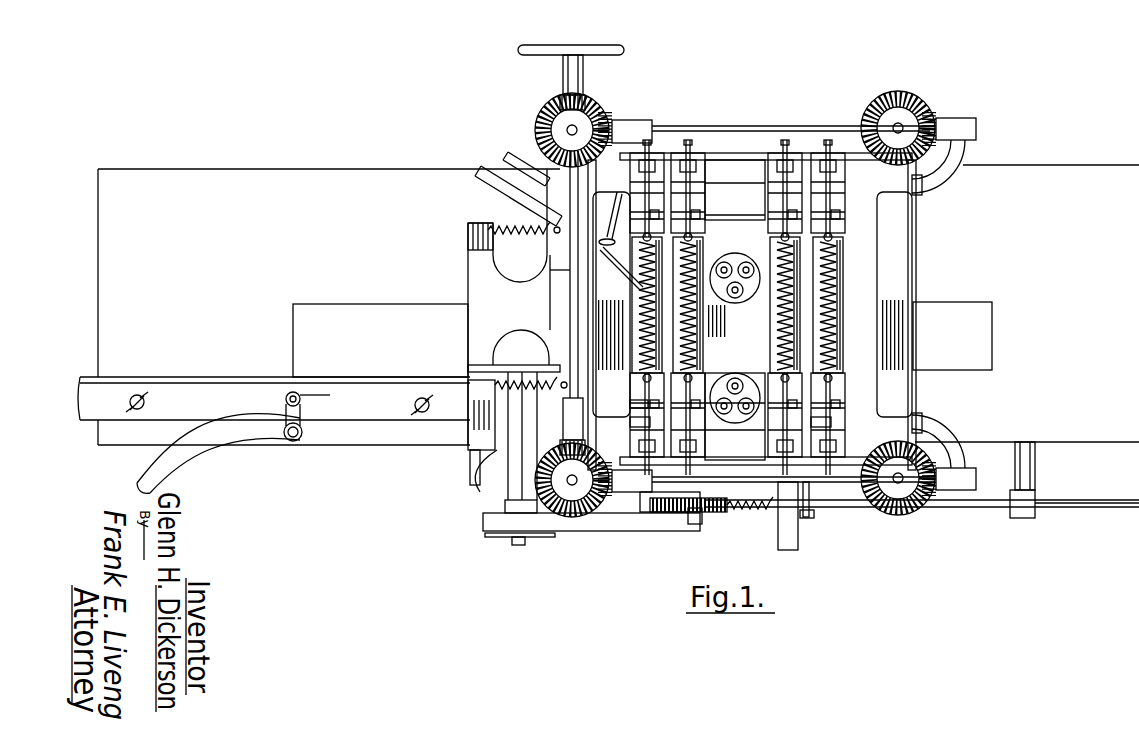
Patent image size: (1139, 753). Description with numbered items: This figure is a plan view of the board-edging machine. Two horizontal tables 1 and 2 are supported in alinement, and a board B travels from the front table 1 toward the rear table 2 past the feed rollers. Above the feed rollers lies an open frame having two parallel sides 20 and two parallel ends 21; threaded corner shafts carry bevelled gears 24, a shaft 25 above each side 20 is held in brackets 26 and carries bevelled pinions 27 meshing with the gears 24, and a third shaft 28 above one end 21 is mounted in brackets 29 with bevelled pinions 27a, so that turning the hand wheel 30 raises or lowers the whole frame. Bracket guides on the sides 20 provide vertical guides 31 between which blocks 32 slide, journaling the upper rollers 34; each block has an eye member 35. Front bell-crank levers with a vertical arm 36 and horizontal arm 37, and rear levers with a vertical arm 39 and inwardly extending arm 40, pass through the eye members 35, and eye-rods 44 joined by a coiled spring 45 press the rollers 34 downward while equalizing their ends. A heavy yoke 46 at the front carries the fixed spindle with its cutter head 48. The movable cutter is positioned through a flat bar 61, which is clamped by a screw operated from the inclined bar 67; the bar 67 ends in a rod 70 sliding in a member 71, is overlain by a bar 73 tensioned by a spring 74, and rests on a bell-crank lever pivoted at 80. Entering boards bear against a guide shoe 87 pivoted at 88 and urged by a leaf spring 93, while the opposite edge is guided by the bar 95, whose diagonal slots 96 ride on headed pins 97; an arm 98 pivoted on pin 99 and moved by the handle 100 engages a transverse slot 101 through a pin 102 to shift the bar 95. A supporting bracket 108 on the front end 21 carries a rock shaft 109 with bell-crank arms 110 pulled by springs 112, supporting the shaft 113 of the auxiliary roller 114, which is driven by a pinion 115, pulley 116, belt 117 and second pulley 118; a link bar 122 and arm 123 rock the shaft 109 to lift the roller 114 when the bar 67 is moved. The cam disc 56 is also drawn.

The front table 1 is at (306, 184).
The rear table 2 is at (1100, 180).
The board B is at (365, 313).
The sides of the open frame 20 is at (736, 158).
The ends of the open frame 21 is at (548, 165).
The bevelled gear 24 is at (604, 128).
The shaft 25 is at (765, 127).
The brackets 26 is at (640, 125).
The bevelled pinion 27 is at (936, 122).
The bevelled pinions 27a is at (588, 112).
The third shaft 28 is at (570, 284).
The brackets 29 is at (565, 76).
The hand wheel 30 is at (608, 50).
The vertical guides 31 is at (628, 138).
The blocks 32 is at (838, 237).
The rollers 34 is at (632, 283).
The eye member 35 is at (640, 407).
The vertical arm 36 is at (840, 446).
The horizontal arm 37 is at (840, 401).
The vertical arm 39 is at (652, 160).
The inwardly extending arm 40 is at (706, 184).
The eye-rods 44 is at (780, 206).
The coiled spring 45 is at (640, 316).
The yoke 46 is at (846, 421).
The cutter head 48 is at (740, 382).
The upper cam disc 56 is at (736, 266).
The flat bar 61 is at (800, 552).
The bar 67 is at (988, 509).
The rod 70 is at (1060, 509).
The member 71 is at (1020, 520).
The bar 73 is at (787, 492).
The spring 74 is at (760, 511).
The pivot 80 is at (810, 519).
The guide shoe 87 is at (492, 186).
The pivot post 88 is at (630, 269).
The leaf spring 93 is at (522, 176).
The guide bar 95 is at (365, 412).
The diagonally cut slots 96 is at (146, 404).
The headed pins 97 is at (139, 395).
The arm 98 is at (301, 416).
The pin 99 is at (292, 442).
The operating arm or handle 100 is at (220, 437).
The transverse slot 101 is at (290, 394).
The pin 102 is at (305, 398).
The supporting bracket 108 is at (475, 313).
The rock shaft 109 is at (480, 417).
The vertical arm 110 is at (472, 227).
The springs 112 is at (540, 216).
The shaft 113 is at (518, 546).
The roller 114 is at (475, 249).
The pinion 115 is at (695, 522).
The pulley 116 is at (692, 516).
The belt 117 is at (672, 526).
The second pulley 118 is at (485, 536).
The link bar 122 is at (478, 467).
The arm 123 is at (475, 447).